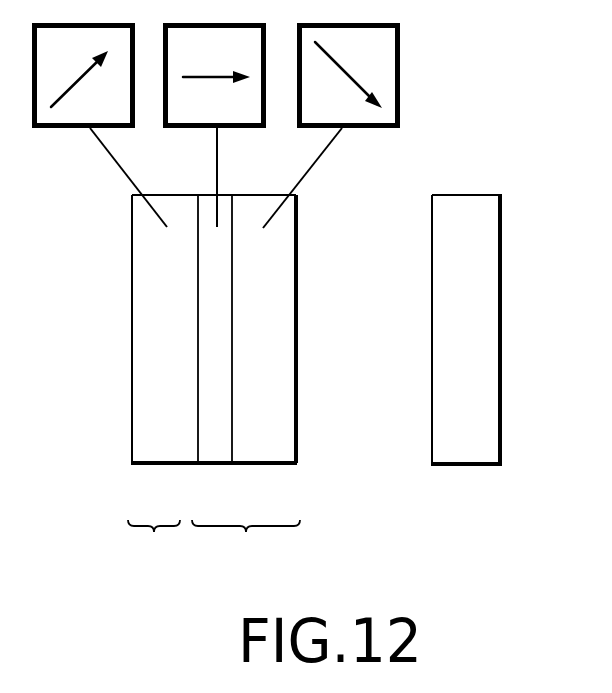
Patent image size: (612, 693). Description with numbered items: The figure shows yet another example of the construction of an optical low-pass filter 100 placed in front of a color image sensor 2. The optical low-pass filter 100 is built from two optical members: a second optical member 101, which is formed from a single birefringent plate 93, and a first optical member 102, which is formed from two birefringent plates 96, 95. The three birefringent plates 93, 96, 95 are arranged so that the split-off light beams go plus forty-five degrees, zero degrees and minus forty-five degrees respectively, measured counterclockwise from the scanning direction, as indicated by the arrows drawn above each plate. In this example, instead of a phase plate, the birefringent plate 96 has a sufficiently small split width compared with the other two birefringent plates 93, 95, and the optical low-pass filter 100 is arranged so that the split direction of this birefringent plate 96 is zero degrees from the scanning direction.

The color image sensor 2 is at (503, 312).
The optical low-pass filter 100 is at (130, 273).
The birefringent plate 93 is at (163, 464).
The birefringent plate 96 is at (220, 464).
The birefringent plate 95 is at (274, 464).
The second optical member 101 is at (154, 545).
The first optical member 102 is at (246, 545).